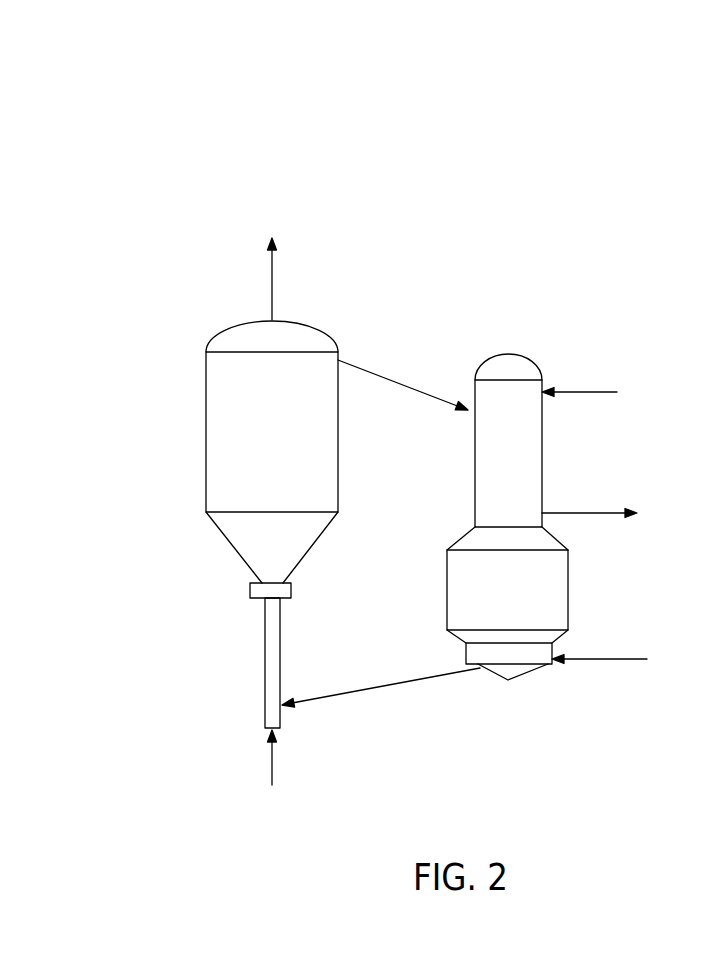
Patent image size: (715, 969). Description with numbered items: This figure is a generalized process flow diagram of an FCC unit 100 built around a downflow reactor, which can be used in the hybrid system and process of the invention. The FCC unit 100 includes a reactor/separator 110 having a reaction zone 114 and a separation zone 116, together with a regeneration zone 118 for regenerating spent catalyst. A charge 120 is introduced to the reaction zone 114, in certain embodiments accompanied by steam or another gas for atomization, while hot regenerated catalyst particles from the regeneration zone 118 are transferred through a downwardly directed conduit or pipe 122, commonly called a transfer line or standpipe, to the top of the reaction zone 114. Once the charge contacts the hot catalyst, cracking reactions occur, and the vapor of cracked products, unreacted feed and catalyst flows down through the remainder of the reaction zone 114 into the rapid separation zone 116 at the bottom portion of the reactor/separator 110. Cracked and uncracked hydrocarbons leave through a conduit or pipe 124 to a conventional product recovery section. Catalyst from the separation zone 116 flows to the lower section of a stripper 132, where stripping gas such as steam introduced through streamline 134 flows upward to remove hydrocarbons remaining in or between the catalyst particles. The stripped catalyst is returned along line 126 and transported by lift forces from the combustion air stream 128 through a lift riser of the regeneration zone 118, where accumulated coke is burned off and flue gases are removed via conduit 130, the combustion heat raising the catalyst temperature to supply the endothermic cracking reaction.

The FCC unit 100 is at (203, 168).
The reactor/separator 110 is at (636, 445).
The reaction zone 114 is at (528, 459).
The separation zone 116 is at (528, 608).
The regeneration zone 118 is at (290, 453).
The charge 120 is at (617, 392).
The conduit or pipe 122 is at (431, 396).
The conduit or pipe 124 is at (608, 513).
The return line 126 is at (372, 688).
The combustion air stream 128 is at (272, 770).
The conduit 130 is at (272, 262).
The stripper 132 is at (466, 656).
The streamline 134 is at (620, 659).